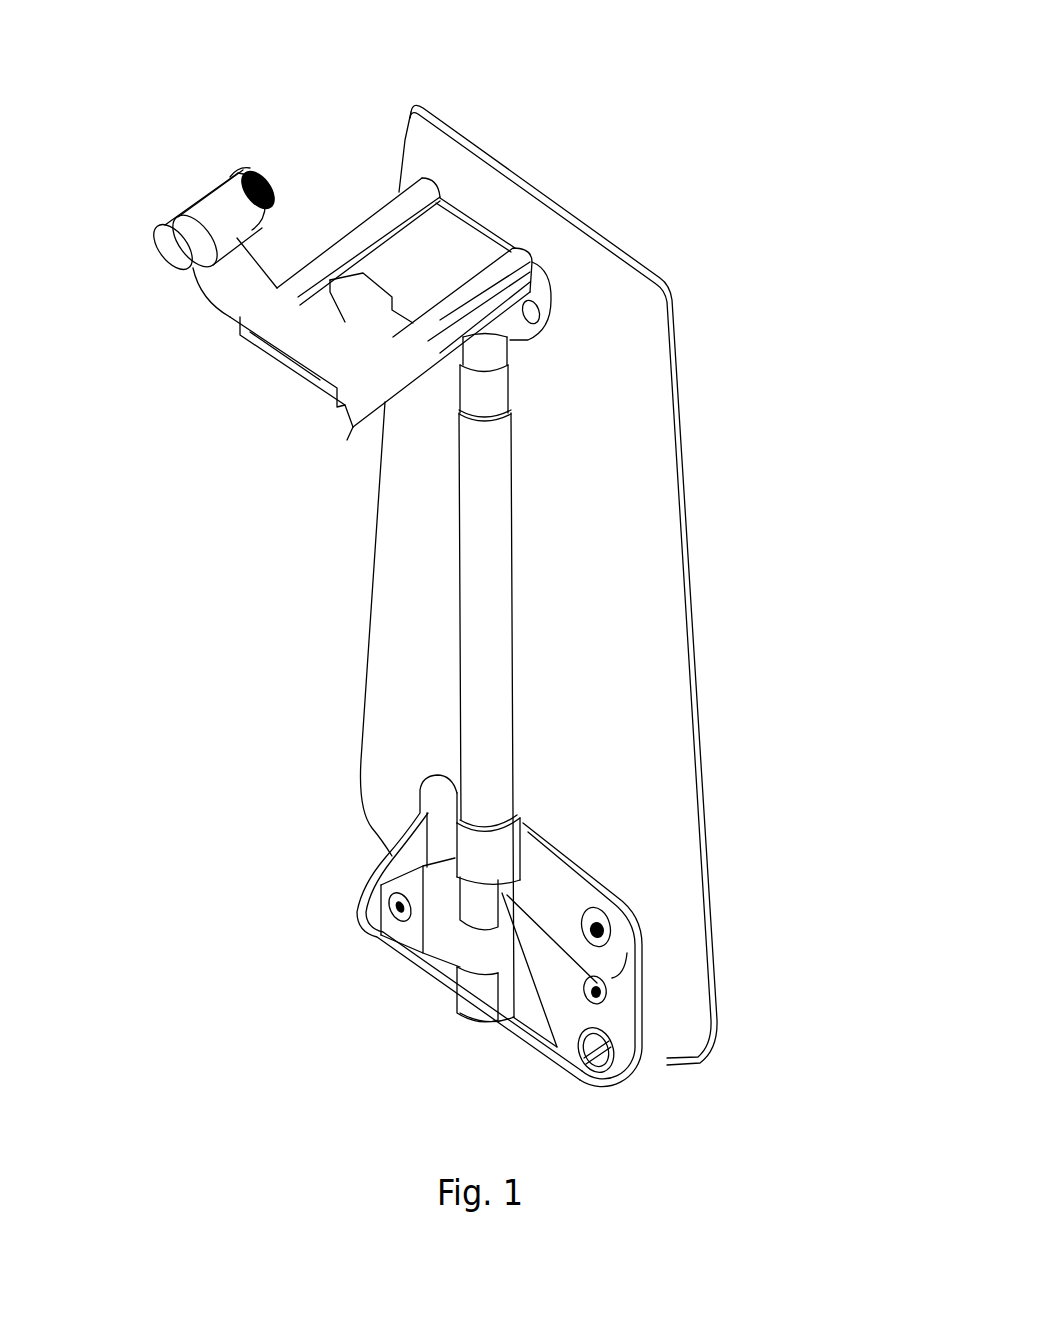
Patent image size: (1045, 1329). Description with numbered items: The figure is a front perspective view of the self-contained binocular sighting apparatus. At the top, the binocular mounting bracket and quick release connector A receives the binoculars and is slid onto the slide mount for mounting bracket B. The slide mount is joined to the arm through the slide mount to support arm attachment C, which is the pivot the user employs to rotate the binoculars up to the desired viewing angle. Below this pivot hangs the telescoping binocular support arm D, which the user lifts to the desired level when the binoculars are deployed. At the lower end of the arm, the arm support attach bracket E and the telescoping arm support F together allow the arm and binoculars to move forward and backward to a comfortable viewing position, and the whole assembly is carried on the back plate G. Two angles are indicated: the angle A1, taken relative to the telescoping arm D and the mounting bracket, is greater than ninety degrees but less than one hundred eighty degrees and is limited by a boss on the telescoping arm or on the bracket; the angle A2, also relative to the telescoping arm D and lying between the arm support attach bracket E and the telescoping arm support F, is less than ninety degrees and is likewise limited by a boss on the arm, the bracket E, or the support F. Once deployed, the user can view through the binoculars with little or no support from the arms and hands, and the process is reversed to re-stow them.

The Binocular Mounting Bracket & Quick Release Connector A is at (203, 182).
The Slide Mount for Mounting Bracket B is at (347, 430).
The Slide Mount to Support Arm Attachment C is at (557, 267).
The Telescoping Binocular Support Arm D is at (520, 606).
The Arm Support Attach Bracket E is at (632, 1077).
The Telescoping Arm Support F is at (410, 973).
The Back Plate G is at (678, 335).
The angle A1 is at (468, 443).
The angle A2 is at (563, 860).